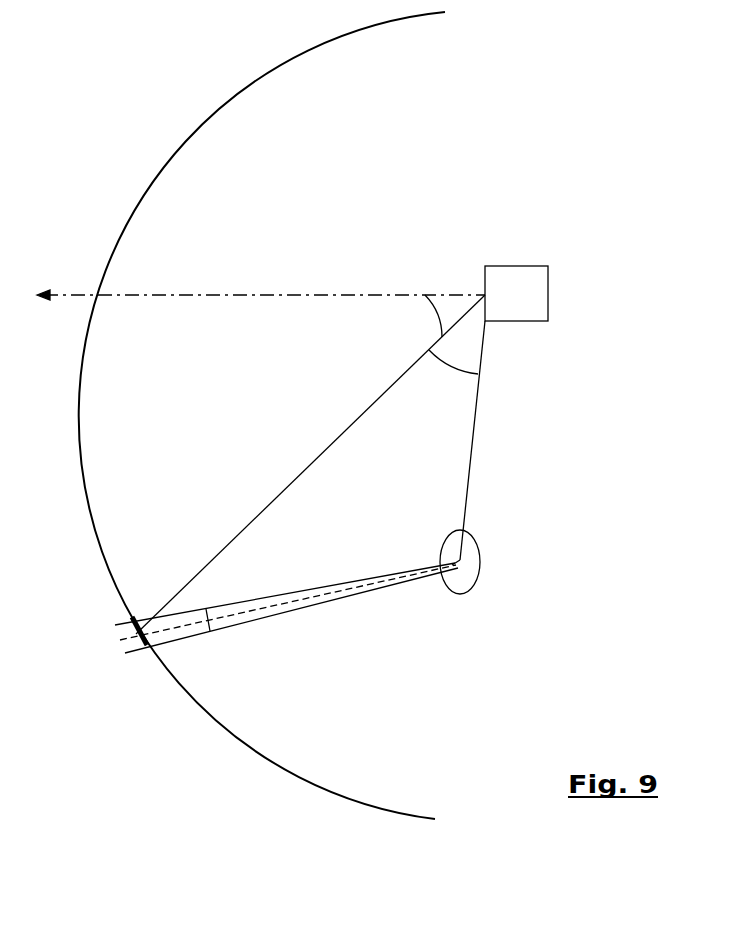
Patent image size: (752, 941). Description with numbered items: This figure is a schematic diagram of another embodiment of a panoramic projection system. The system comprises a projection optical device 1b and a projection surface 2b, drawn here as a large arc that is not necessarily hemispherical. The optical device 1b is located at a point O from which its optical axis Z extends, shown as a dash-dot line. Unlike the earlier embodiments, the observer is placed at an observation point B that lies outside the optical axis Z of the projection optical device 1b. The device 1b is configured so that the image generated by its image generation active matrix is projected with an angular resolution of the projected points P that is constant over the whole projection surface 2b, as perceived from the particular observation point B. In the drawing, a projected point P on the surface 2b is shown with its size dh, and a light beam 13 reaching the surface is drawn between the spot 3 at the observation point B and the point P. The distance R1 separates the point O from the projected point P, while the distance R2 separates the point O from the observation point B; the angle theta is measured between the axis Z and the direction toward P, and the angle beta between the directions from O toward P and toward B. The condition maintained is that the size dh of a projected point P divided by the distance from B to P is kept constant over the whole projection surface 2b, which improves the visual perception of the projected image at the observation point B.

The projection optical device 1b is at (543, 275).
The projection surface 2b is at (92, 497).
The light beam spot 3 is at (470, 550).
The light beam 13 is at (217, 625).
The observation point B is at (477, 572).
The distance between point O' and point P' R1 is at (282, 476).
The distance between point O' and point B R2 is at (473, 443).
The point O' O is at (484, 289).
The projected point P' P is at (125, 622).
The optical axis O'Z' Z is at (256, 312).
The size Dh' of a projected point dh is at (134, 640).
The angle theta is at (424, 304).
The angle beta is at (443, 363).